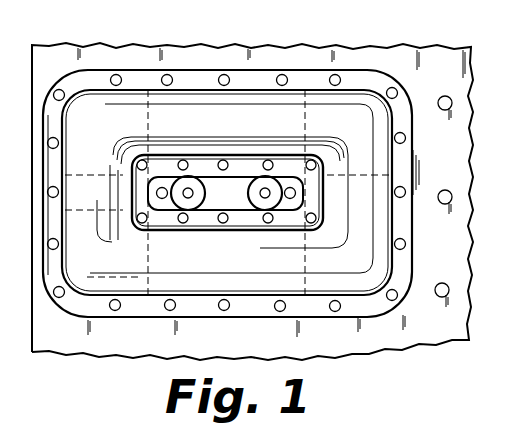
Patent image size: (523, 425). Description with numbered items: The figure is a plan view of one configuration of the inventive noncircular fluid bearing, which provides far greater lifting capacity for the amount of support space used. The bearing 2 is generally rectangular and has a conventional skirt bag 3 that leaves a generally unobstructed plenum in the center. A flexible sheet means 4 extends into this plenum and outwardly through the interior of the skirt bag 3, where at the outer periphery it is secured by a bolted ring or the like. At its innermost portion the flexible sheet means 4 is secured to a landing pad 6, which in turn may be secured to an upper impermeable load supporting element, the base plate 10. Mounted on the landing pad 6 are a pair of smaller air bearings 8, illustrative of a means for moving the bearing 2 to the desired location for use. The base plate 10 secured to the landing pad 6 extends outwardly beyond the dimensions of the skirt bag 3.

The bearing 2 is at (312, 113).
The skirt bag 3 is at (129, 268).
The flexible sheet means 4 is at (198, 165).
The landing pad 6 is at (238, 203).
The smaller air bearings 8 is at (192, 191).
The base plate 10 is at (453, 86).